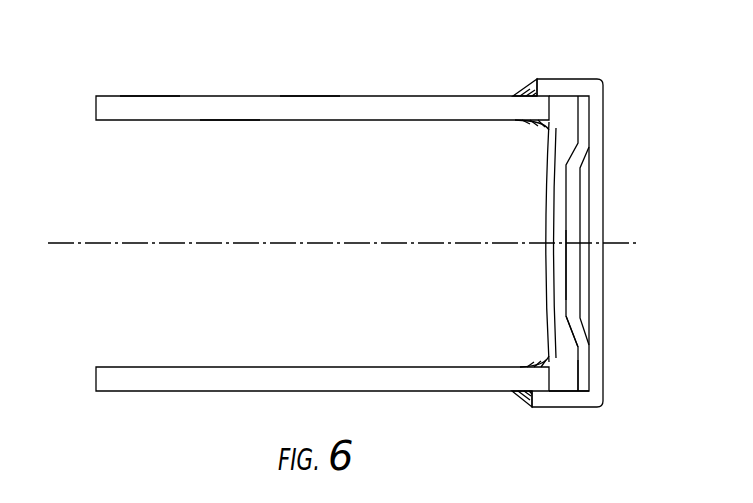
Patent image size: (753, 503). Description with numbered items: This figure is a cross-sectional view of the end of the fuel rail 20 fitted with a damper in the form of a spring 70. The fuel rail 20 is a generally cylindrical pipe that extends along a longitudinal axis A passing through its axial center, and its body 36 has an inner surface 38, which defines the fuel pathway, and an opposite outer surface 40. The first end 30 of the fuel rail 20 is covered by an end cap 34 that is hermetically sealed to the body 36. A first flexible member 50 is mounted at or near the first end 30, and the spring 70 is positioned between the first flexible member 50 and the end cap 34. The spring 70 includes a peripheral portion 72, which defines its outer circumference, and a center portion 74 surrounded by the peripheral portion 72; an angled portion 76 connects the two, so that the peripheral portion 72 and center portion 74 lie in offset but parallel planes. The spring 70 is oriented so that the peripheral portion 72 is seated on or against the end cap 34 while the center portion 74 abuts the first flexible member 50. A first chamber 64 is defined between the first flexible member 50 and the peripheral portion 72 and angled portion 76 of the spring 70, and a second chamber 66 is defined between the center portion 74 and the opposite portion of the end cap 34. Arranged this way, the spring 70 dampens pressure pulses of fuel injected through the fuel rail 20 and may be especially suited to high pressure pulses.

The longitudinal axis A is at (124, 243).
The fuel rail 20 is at (228, 94).
The first end 30 is at (538, 78).
The end cap 34 is at (603, 314).
The body 36 is at (140, 94).
The inner surface 38 is at (228, 122).
The outer surface 40 is at (300, 95).
The first flexible member 50 is at (546, 152).
The first chamber 64 is at (563, 387).
The second chamber 66 is at (573, 173).
The spring 70 is at (561, 208).
The peripheral portion 72 is at (583, 380).
The center portion 74 is at (558, 277).
The angled portion 76 is at (573, 332).